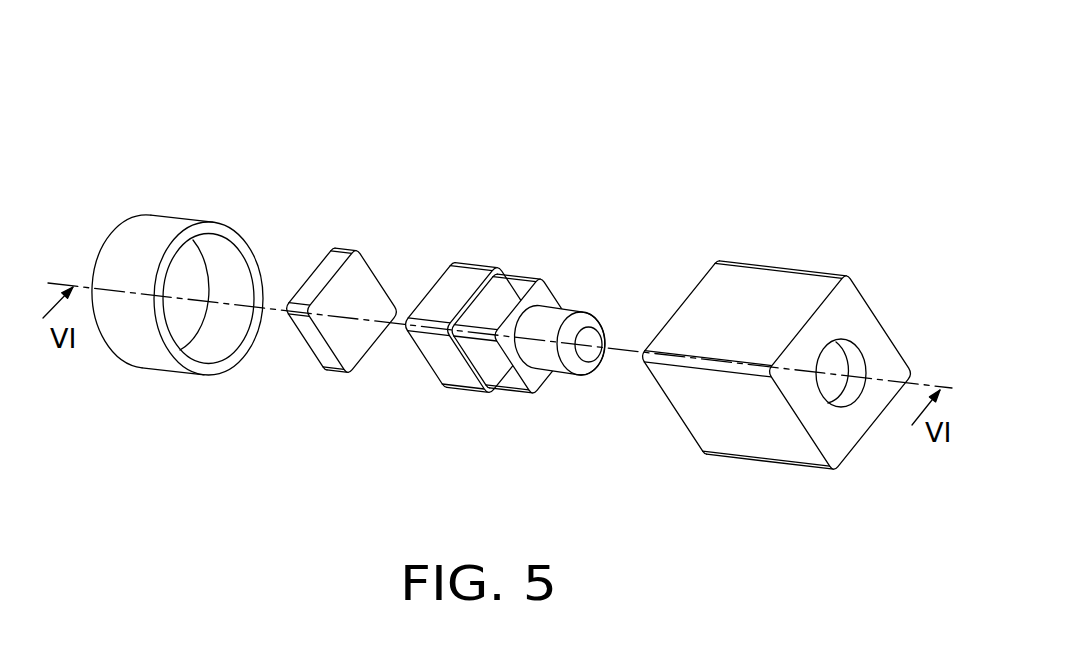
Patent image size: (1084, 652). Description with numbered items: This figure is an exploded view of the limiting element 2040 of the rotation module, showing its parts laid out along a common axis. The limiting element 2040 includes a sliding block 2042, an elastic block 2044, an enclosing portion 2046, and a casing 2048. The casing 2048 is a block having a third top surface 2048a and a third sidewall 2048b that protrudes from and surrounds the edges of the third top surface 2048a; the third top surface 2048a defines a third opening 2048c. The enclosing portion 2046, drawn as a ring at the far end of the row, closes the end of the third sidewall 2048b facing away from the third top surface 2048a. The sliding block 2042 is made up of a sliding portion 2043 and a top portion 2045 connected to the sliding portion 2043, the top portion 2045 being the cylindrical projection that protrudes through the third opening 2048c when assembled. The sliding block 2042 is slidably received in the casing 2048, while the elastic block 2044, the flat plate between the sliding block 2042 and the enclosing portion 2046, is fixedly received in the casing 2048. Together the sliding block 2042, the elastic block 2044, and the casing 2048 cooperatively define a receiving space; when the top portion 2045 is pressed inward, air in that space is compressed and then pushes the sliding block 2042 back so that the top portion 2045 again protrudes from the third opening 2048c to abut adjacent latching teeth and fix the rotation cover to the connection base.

The limiting element 2040 is at (502, 288).
The sliding block 2042 is at (537, 280).
The sliding portion 2043 is at (502, 291).
The elastic block 2044 is at (358, 272).
The top portion 2045 is at (552, 315).
The enclosing portion 2046 is at (174, 228).
The casing 2048 is at (779, 379).
The third top surface 2048a is at (828, 425).
The third sidewall 2048b is at (707, 432).
The third opening 2048c is at (835, 365).